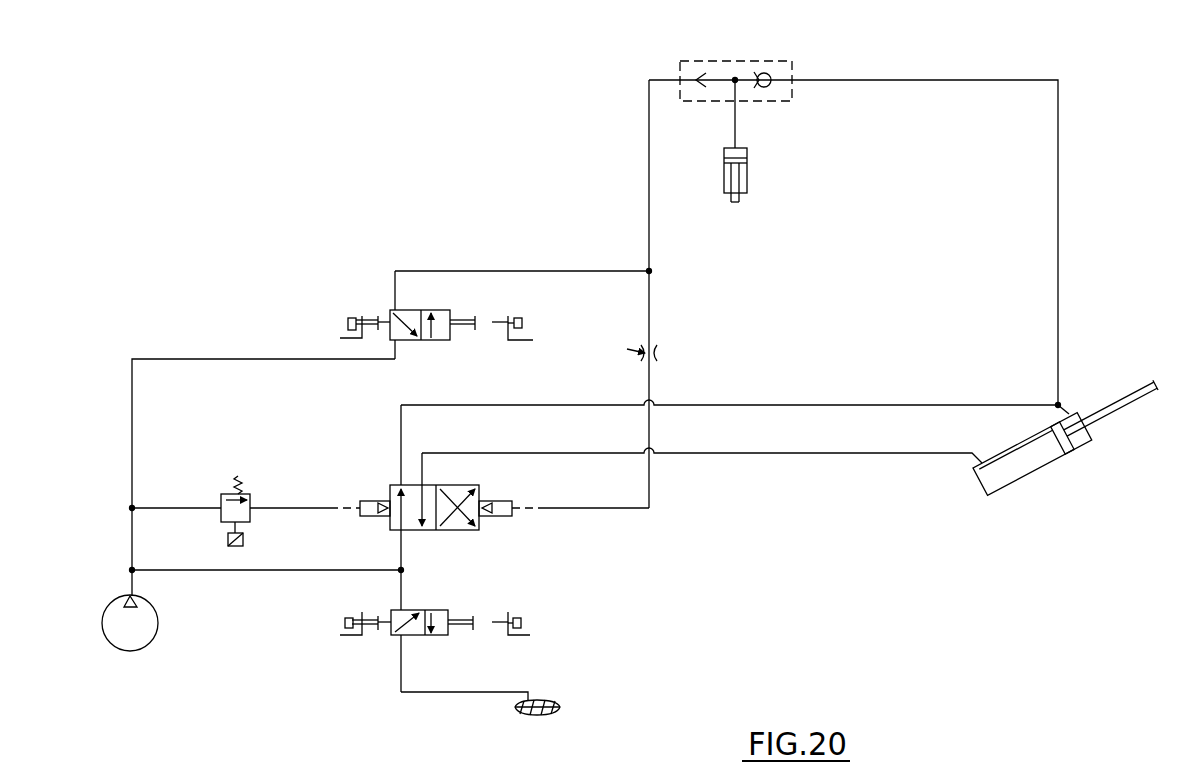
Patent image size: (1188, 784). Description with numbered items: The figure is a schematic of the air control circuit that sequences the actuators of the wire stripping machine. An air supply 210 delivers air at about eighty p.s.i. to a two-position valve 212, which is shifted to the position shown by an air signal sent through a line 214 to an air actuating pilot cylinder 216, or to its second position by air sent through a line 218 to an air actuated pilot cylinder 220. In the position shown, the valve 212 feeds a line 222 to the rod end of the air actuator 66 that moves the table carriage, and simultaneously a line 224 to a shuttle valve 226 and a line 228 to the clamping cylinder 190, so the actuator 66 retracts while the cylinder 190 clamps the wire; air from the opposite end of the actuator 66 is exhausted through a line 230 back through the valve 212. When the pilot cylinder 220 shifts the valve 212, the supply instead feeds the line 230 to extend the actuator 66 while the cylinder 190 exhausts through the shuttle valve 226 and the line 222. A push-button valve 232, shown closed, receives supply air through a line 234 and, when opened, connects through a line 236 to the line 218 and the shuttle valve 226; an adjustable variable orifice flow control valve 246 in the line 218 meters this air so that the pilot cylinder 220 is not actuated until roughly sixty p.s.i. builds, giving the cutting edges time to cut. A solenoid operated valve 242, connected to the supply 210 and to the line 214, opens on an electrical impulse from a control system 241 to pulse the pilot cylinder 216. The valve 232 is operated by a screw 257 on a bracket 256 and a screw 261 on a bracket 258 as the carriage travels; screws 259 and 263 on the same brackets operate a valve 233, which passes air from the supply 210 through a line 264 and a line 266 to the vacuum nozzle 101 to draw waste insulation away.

The air actuator 66 is at (1053, 458).
The vacuum nozzle 101 is at (538, 716).
The clamping cylinder 190 is at (748, 173).
The air supply 210 is at (102, 620).
The two-position valve 212 is at (462, 485).
The line 214 is at (290, 507).
The air actuating pilot cylinder 216 is at (372, 518).
The line 218 is at (652, 506).
The air actuated pilot cylinder 220 is at (510, 518).
The line 222 is at (780, 403).
The line 224 is at (1060, 256).
The shuttle valve 226 is at (738, 59).
The line 228 is at (737, 128).
The line 230 is at (744, 453).
The valve 232 is at (443, 310).
The valve 233 is at (428, 610).
The line 234 is at (130, 443).
The line 236 is at (588, 270).
The control system 241 is at (226, 540).
The solenoid operated valve 242 is at (220, 498).
The adjustable variable orifice flow control valve 246 is at (659, 352).
The bracket 256 is at (345, 337).
The adjustable screw 257 is at (347, 318).
The bracket 258 is at (518, 341).
The adjustable screw 259 is at (344, 620).
The screw 261 is at (523, 323).
The adjustable screw 263 is at (522, 620).
The line 264 is at (226, 574).
The line 266 is at (470, 694).